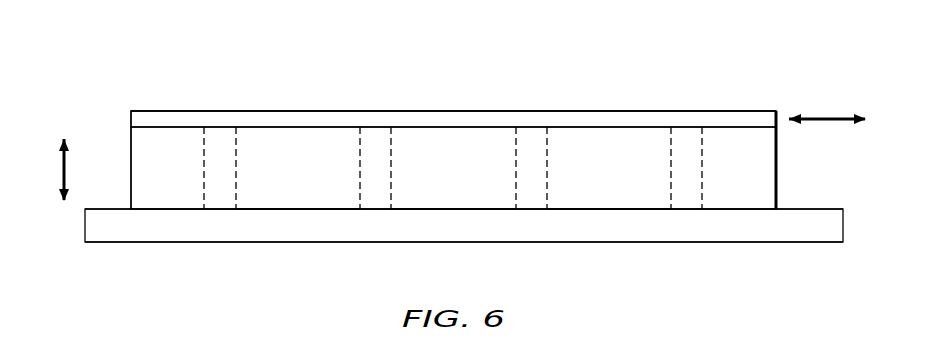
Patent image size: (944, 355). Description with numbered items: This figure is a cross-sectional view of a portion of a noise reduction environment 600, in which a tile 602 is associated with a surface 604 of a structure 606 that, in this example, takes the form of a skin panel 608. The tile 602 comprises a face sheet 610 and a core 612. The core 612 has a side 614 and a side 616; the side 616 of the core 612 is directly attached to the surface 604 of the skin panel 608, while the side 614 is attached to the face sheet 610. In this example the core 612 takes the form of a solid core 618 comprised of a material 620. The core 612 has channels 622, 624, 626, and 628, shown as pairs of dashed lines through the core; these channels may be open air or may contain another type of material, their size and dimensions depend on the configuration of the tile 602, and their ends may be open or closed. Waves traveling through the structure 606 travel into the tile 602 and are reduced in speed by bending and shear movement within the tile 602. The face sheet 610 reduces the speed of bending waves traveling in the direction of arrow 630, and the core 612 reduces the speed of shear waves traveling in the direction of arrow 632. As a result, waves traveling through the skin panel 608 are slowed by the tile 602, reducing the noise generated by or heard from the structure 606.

The noise reduction environment 600 is at (380, 72).
The tile 602 is at (627, 108).
The surface 604 is at (812, 208).
The structure 606 is at (133, 242).
The skin panel 608 is at (170, 227).
The face sheet 610 is at (527, 111).
The core 612 is at (131, 175).
The side 614 is at (320, 127).
The side 616 is at (597, 212).
The solid core 618 is at (302, 187).
The material 620 is at (464, 178).
The channel 622 is at (217, 191).
The channel 624 is at (373, 190).
The channel 626 is at (533, 192).
The channel 628 is at (688, 193).
The arrow 630 is at (828, 115).
The arrow 632 is at (62, 165).